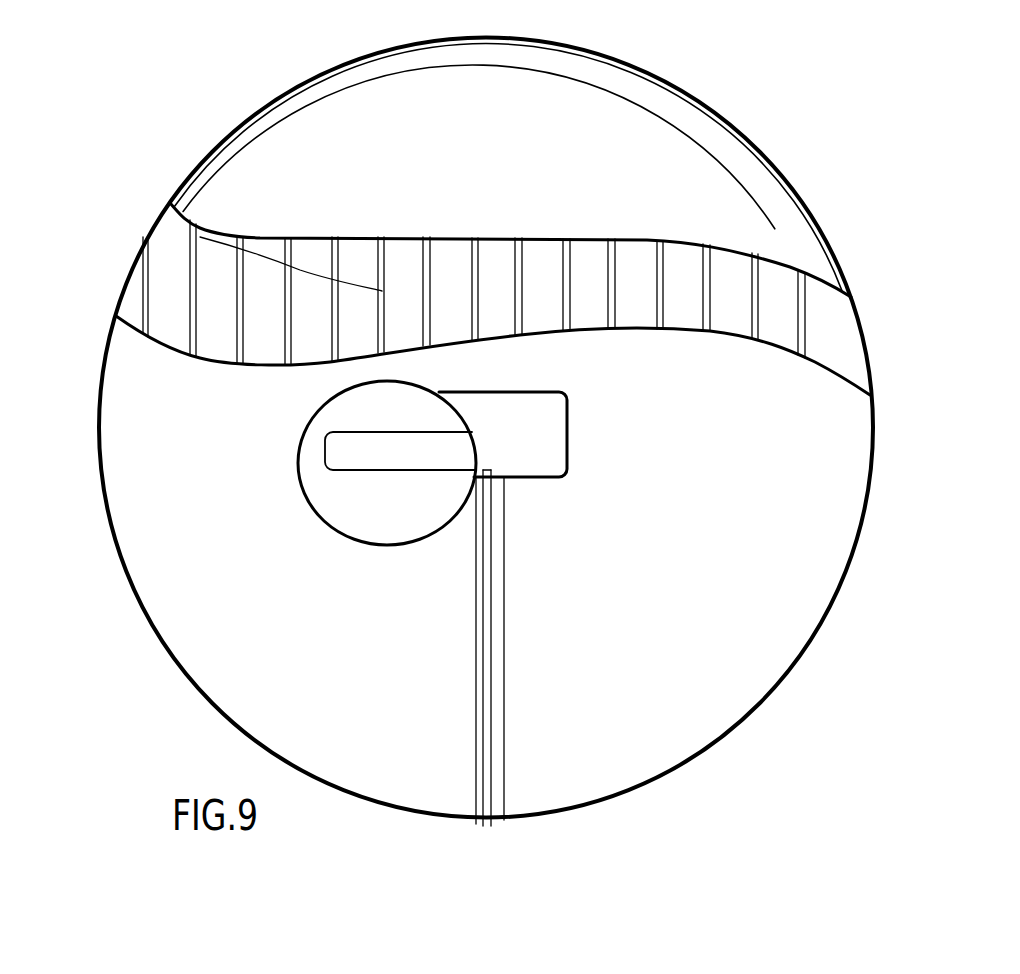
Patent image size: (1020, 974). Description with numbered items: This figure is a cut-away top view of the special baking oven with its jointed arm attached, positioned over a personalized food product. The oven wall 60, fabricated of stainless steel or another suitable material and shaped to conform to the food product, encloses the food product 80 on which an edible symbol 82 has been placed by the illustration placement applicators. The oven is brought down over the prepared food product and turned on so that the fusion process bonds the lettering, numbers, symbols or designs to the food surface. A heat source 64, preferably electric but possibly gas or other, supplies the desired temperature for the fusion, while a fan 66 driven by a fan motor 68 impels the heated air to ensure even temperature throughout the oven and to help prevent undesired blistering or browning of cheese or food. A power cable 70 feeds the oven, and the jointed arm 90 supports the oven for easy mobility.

The oven wall 60 is at (645, 610).
The heat source 64 is at (200, 237).
The fan 66 is at (373, 463).
The fan motor 68 is at (487, 453).
The power cable 70 is at (491, 804).
The food product 80 is at (640, 127).
The edible symbol 82 is at (540, 173).
The jointed arm 90 is at (500, 817).